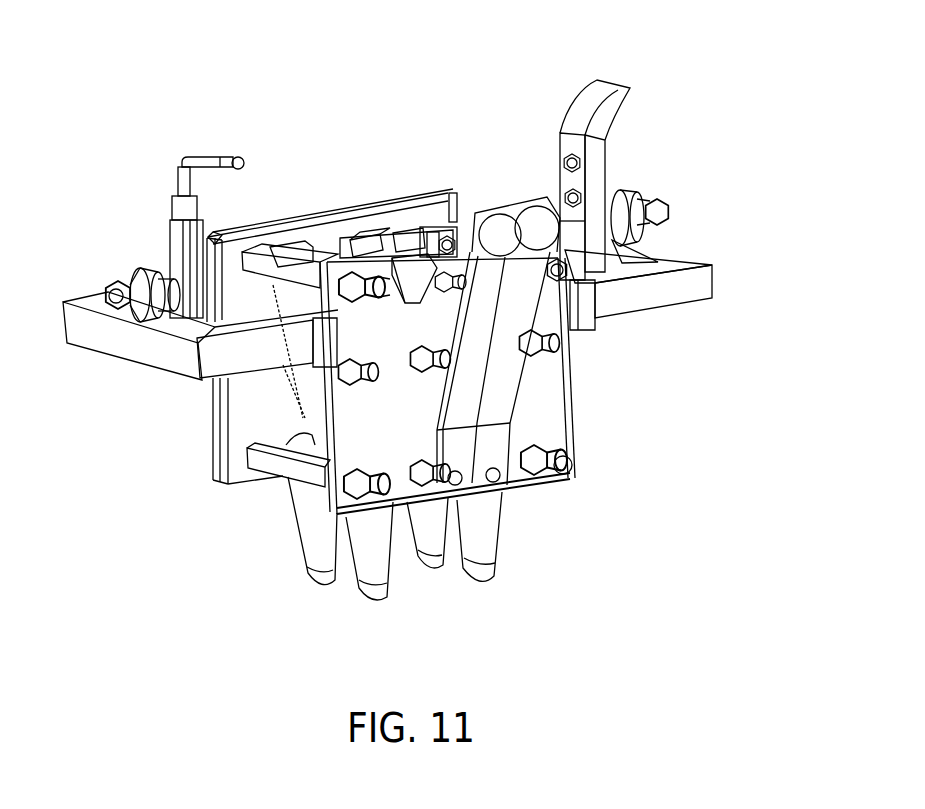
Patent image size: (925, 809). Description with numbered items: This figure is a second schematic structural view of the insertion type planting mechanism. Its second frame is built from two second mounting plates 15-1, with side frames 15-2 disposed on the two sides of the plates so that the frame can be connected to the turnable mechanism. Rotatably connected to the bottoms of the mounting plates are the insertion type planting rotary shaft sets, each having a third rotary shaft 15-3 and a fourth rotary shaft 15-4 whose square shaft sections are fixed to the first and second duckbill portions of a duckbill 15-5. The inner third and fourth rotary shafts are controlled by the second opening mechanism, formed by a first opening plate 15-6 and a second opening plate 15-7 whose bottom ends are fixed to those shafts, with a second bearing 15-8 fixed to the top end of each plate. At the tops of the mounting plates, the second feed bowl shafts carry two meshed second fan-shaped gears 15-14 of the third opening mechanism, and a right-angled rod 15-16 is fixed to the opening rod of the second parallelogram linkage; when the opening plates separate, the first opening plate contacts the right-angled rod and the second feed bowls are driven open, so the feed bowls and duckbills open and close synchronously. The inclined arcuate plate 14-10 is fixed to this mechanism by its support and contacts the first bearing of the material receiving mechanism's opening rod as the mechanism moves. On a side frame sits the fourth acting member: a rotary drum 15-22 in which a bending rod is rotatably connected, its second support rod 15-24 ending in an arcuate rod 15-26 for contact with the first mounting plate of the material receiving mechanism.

The second mounting plate 15-1 is at (245, 423).
The side frame 15-2 is at (87, 330).
The third rotary shaft 15-3 is at (440, 500).
The fourth rotary shaft 15-4 is at (364, 518).
The duckbill 15-5 is at (322, 535).
The first opening plate 15-6 is at (500, 490).
The second opening plate 15-7 is at (553, 487).
The second bearing 15-8 is at (522, 231).
The second fan-shaped gear 15-14 is at (418, 252).
The right-angled rod 15-16 is at (417, 215).
The rotary drum 15-22 is at (172, 232).
The second support rod 15-24 is at (200, 158).
The arcuate rod 15-26 is at (234, 157).
The inclined arcuate plate 14-10 is at (593, 98).